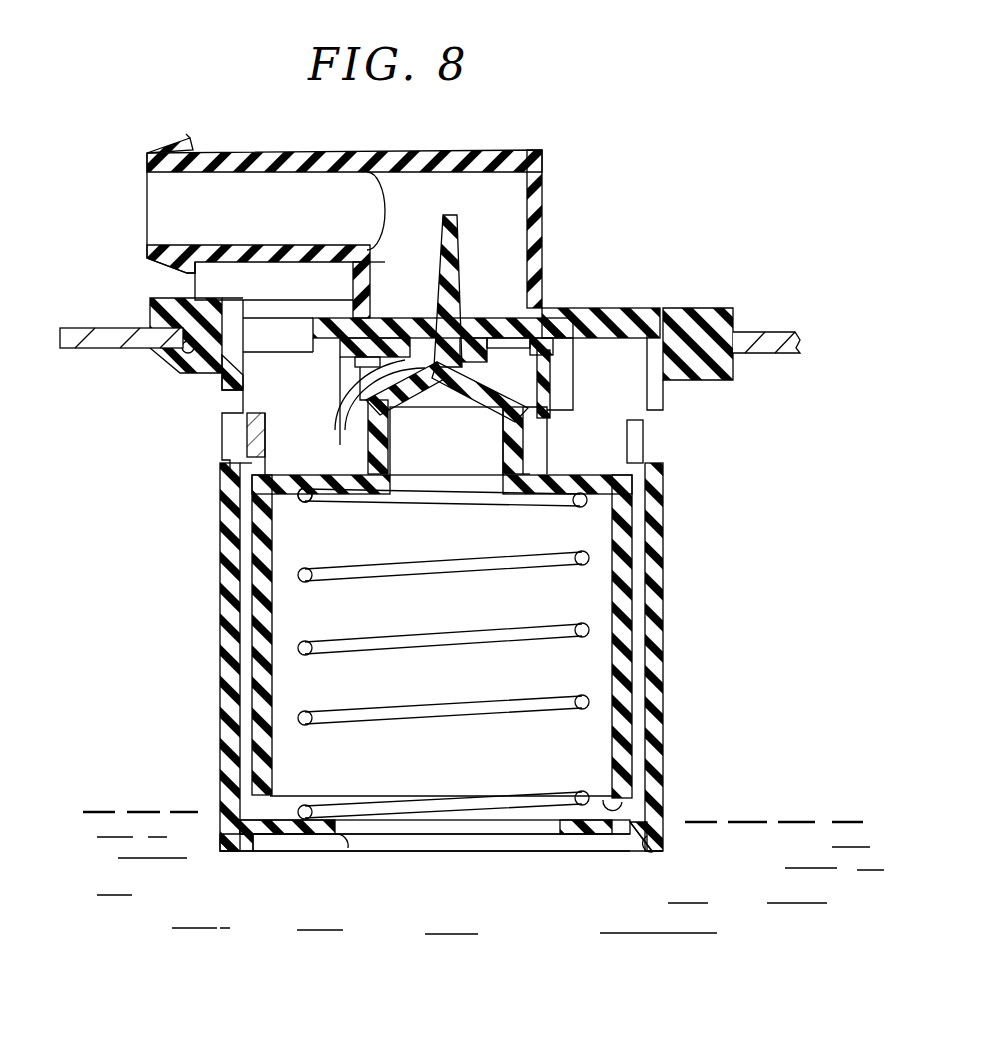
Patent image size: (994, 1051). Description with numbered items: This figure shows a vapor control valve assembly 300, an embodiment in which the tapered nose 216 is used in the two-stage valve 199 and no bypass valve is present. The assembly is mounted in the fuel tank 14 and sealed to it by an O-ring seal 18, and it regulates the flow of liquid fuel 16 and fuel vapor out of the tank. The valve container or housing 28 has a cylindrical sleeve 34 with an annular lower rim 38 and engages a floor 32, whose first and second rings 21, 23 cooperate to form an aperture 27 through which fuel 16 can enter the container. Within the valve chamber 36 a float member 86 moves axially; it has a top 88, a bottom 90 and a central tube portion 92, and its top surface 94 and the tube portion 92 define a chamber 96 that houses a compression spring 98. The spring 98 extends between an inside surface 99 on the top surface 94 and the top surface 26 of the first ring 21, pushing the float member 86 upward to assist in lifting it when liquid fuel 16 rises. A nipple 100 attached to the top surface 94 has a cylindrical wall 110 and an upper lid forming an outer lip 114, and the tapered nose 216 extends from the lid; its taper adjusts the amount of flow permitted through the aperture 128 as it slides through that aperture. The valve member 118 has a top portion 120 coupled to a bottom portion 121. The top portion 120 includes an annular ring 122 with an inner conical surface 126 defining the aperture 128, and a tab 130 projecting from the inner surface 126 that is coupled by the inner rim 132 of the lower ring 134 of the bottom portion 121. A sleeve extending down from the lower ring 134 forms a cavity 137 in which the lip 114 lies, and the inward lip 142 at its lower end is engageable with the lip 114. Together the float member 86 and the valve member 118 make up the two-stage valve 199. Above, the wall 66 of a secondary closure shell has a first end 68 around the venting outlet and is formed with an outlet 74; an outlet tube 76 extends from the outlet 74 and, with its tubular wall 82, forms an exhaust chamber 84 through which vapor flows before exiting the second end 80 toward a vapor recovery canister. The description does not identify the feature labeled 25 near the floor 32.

The vapor control valve assembly 300 is at (607, 178).
The outlet tube 76 is at (180, 128).
The tubular wall 82 is at (170, 148).
The second end 80 is at (148, 180).
The exhaust chamber 84 is at (244, 218).
The tapered nose 216 is at (425, 252).
The outlet 74 is at (368, 222).
The wall 66 is at (540, 238).
The first end 68 is at (515, 325).
The valve seat plate 122 is at (543, 336).
The aperture 128 is at (470, 340).
The inner conical surface 126 is at (488, 345).
The tab 130 is at (413, 340).
The valve member 118 is at (303, 330).
The inner rim 132 is at (350, 320).
The O-ring seal 18 is at (150, 312).
The fuel tank 14 is at (770, 345).
The top portion 120 is at (582, 334).
The bottom portion 121 is at (173, 362).
The lower ring 134 is at (317, 340).
The cavity 137 is at (345, 385).
The two-stage valve 199 is at (311, 401).
The inward lip 142 is at (380, 435).
The valve chamber 36 is at (543, 370).
The outer lip 114 is at (545, 395).
The top surface 94 is at (248, 440).
The cylindrical wall 110 is at (388, 468).
The nipple 100 is at (556, 462).
The float member 86 is at (643, 447).
The top 88 is at (635, 470).
The valve container 28 is at (160, 505).
The inside surface 99 is at (262, 478).
The chamber 96 is at (340, 542).
The central tube portion 92 is at (625, 520).
The cylindrical sleeve 34 is at (655, 590).
The compression spring 98 is at (445, 575).
The bottom 90 is at (603, 806).
The top surface 26 is at (280, 830).
The bottom corner 25 is at (655, 830).
The annular lower rim 38 is at (665, 843).
The liquid fuel 16 is at (800, 853).
The second ring 23 is at (242, 842).
The first ring 21 is at (293, 796).
The aperture 27 is at (348, 846).
The floor 32 is at (665, 858).